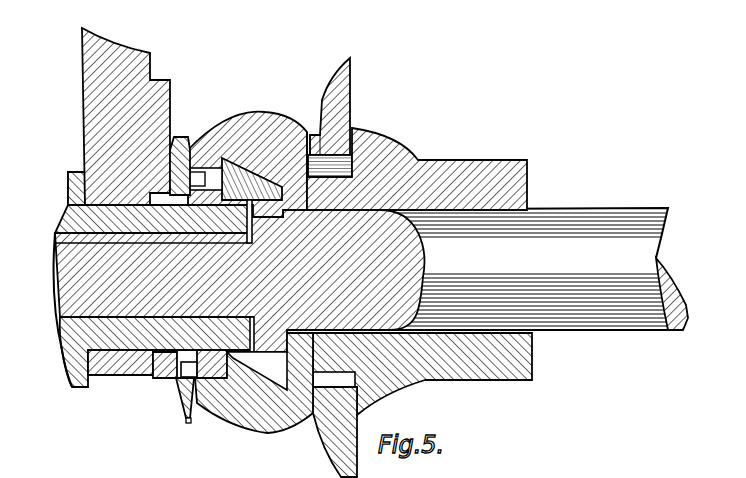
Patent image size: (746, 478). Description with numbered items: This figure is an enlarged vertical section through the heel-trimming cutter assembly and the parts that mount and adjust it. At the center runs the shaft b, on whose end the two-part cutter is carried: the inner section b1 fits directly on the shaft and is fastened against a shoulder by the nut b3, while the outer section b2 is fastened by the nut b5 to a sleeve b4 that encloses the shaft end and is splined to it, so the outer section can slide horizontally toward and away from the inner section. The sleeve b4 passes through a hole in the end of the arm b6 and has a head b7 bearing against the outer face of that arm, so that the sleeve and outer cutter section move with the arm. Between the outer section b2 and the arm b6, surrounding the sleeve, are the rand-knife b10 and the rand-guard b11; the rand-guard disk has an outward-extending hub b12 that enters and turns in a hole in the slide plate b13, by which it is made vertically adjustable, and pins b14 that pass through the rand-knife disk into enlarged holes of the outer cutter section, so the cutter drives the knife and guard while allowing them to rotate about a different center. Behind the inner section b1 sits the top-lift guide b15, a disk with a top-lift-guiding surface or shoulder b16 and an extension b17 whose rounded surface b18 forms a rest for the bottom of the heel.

The shaft b is at (372, 280).
The inner section of the cutter b1 is at (305, 132).
The outer section of the cutter b2 is at (253, 124).
The nut b3 is at (257, 147).
The sleeve b4 is at (76, 173).
The nut b5 is at (263, 265).
The arm b6 is at (140, 51).
The head b7 is at (58, 207).
The rand-knife b10 is at (193, 411).
The rand-guard b11 is at (180, 402).
The hub b12 is at (143, 376).
The slide plate b13 is at (162, 374).
The pins b14 is at (189, 146).
The top-lift guide b15 is at (343, 128).
The top-lift-guiding surface b16 is at (313, 133).
The extension b17 is at (350, 105).
The rounded surface b18 is at (350, 84).